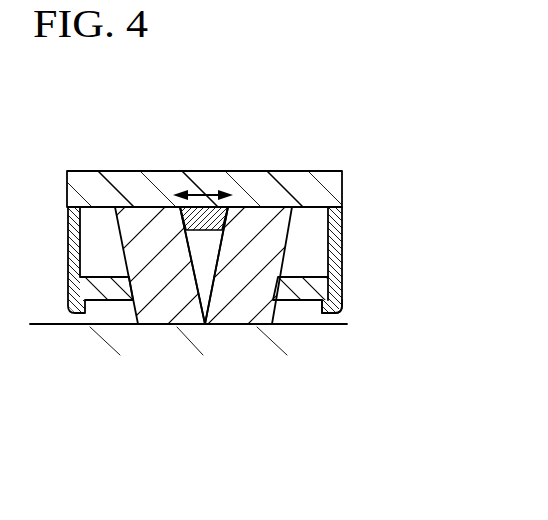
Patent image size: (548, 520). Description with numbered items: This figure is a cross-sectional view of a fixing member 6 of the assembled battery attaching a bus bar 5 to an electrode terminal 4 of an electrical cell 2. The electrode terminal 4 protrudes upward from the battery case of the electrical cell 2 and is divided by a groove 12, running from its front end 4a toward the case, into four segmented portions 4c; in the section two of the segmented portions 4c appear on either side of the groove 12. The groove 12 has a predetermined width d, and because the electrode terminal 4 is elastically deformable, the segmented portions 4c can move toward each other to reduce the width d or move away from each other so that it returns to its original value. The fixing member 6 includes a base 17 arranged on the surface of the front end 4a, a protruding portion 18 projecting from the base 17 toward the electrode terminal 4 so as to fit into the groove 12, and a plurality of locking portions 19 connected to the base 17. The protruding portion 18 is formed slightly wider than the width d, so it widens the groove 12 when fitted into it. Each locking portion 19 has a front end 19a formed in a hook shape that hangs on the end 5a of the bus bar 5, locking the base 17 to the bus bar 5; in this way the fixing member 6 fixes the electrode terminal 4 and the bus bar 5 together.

The electrical cell 2 is at (143, 345).
The electrode terminal 4 is at (186, 294).
The front end 4a is at (268, 214).
The segmented portion 4c is at (168, 324).
The bus bar 5 is at (305, 312).
The end of the bus bar 5a is at (342, 272).
The fixing member 6 is at (241, 257).
The groove 12 is at (190, 248).
The base 17 is at (130, 171).
The protruding portion 18 is at (233, 221).
The locking portion 19 is at (342, 238).
The front end 19a is at (337, 319).
The width d is at (202, 195).